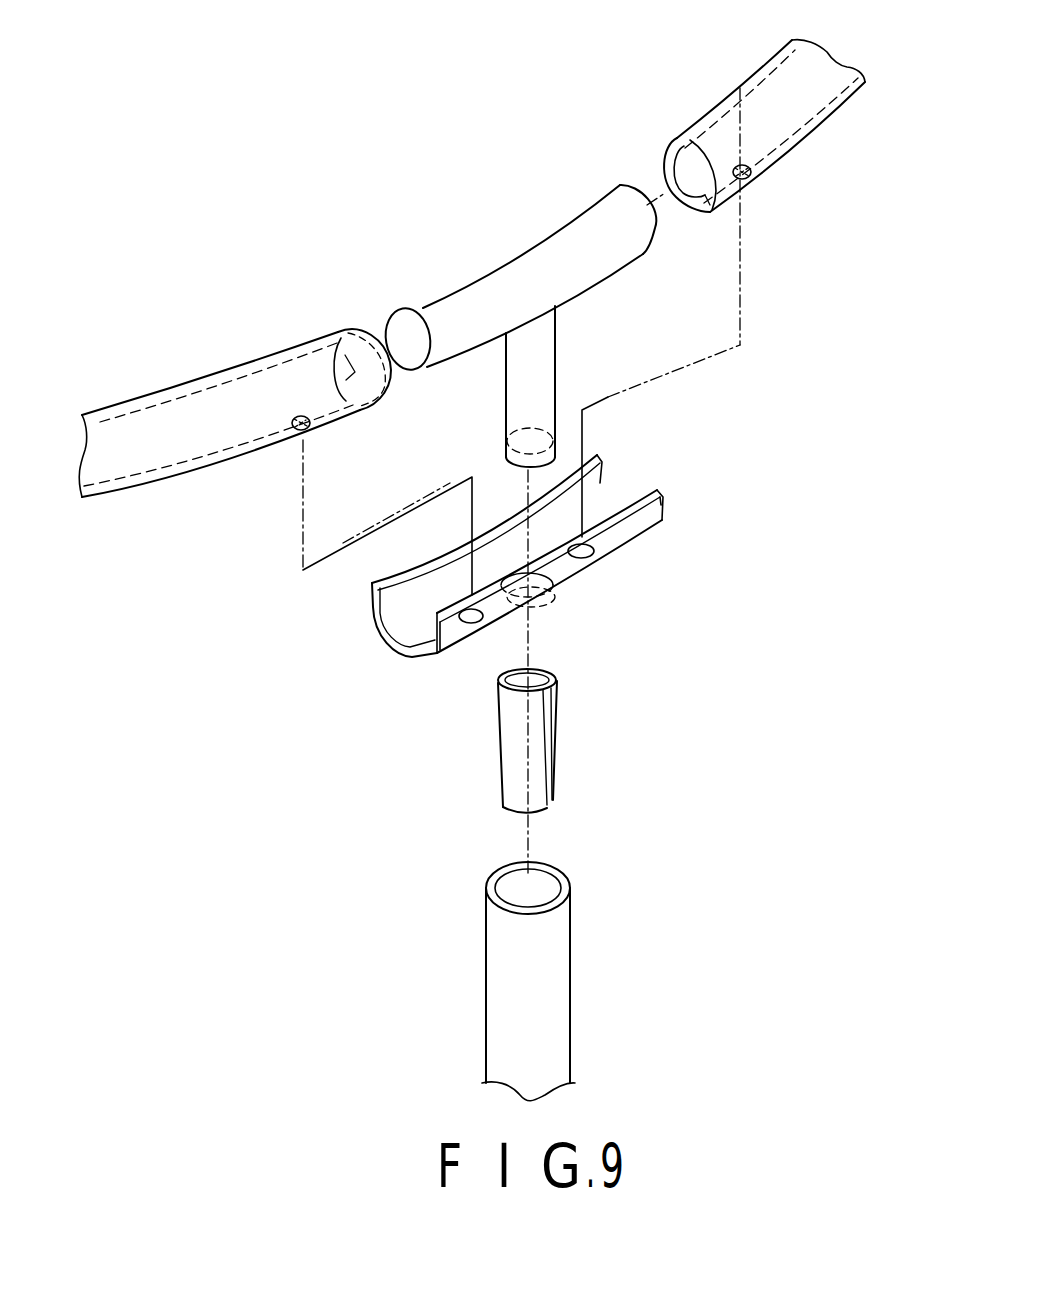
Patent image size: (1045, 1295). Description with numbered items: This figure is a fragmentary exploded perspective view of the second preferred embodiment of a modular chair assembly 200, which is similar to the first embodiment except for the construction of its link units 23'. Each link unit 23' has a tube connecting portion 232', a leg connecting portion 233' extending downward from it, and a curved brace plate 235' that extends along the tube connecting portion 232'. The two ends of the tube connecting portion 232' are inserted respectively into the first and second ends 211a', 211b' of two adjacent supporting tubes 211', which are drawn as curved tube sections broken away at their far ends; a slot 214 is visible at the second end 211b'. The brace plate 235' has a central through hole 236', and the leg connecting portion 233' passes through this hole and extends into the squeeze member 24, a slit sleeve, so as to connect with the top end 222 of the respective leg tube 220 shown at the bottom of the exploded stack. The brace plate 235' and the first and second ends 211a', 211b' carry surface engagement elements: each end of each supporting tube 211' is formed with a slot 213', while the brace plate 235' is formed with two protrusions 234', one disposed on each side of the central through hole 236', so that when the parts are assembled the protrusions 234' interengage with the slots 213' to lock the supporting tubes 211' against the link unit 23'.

The modular chair assembly 200 is at (446, 137).
The supporting tube 211' is at (235, 418).
The first end of supporting tube 211a' is at (314, 338).
The second end of supporting tube 211b' is at (744, 179).
The slot of tube end 214 is at (688, 177).
The slot 213' is at (533, 341).
The link unit 23' is at (553, 530).
The tube connecting portion 232' is at (514, 279).
The leg connecting portion 233' is at (578, 386).
The curved brace plate 235' is at (528, 550).
The protrusion 234' is at (460, 619).
The central through hole 236' is at (585, 620).
The squeeze member 24 is at (535, 778).
The top end of leg tube 222 is at (507, 880).
The leg tube 220 is at (563, 980).